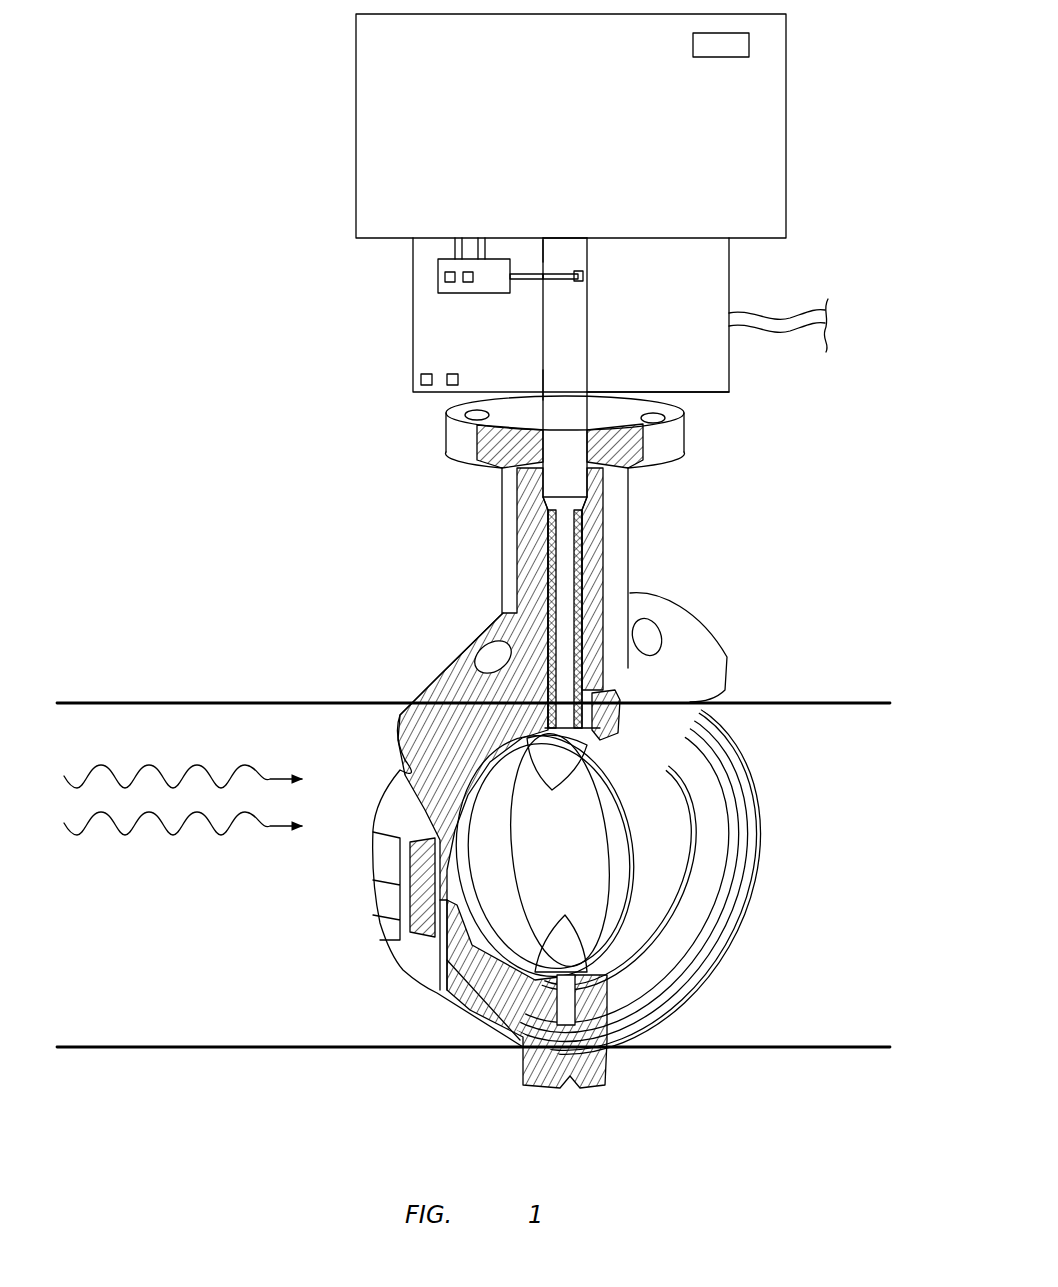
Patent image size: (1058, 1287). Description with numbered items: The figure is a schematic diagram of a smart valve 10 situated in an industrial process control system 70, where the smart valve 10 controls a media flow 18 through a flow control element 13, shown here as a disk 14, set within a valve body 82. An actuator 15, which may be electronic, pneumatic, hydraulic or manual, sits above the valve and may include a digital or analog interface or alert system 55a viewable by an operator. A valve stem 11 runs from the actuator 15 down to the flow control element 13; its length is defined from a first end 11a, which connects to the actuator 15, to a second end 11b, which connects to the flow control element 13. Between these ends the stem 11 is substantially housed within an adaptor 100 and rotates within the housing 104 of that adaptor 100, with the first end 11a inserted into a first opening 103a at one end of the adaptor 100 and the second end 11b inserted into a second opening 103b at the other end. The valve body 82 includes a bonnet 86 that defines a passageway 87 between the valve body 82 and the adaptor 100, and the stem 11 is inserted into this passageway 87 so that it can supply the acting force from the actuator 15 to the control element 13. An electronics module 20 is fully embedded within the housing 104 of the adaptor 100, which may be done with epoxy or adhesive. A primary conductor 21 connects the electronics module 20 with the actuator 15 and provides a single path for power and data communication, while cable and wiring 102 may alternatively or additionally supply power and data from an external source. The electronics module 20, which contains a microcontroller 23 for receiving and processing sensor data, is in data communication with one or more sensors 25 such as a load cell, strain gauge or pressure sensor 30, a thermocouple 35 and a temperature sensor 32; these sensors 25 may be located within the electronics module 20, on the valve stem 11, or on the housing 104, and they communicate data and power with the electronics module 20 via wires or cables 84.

The smart valve 10 is at (292, 346).
The valve stem 11 is at (590, 313).
The first end of valve stem 11a is at (530, 248).
The second end of valve stem 11b is at (540, 714).
The flow control element 13 is at (517, 770).
The disk 14 is at (445, 986).
The actuator 15 is at (786, 112).
The media flow 18 is at (122, 752).
The electronics module 20 is at (437, 270).
The primary conductor 21 is at (460, 253).
The microcontroller 23 is at (468, 273).
The sensors 25 is at (437, 283).
The pressure sensor 30 is at (581, 272).
The temperature sensor 32 is at (452, 386).
The thermocouple 35 is at (421, 380).
The alert system 55a is at (750, 46).
The industrial process control system 70 is at (198, 1048).
The valve body 82 is at (688, 976).
The cables 84 is at (530, 280).
The bonnet 86 is at (632, 566).
The passageway 87 is at (520, 413).
The adaptor 100 is at (729, 393).
The cable and wiring 102 is at (790, 333).
The first opening 103a is at (547, 241).
The second opening 103b is at (546, 386).
The housing 104 is at (703, 393).